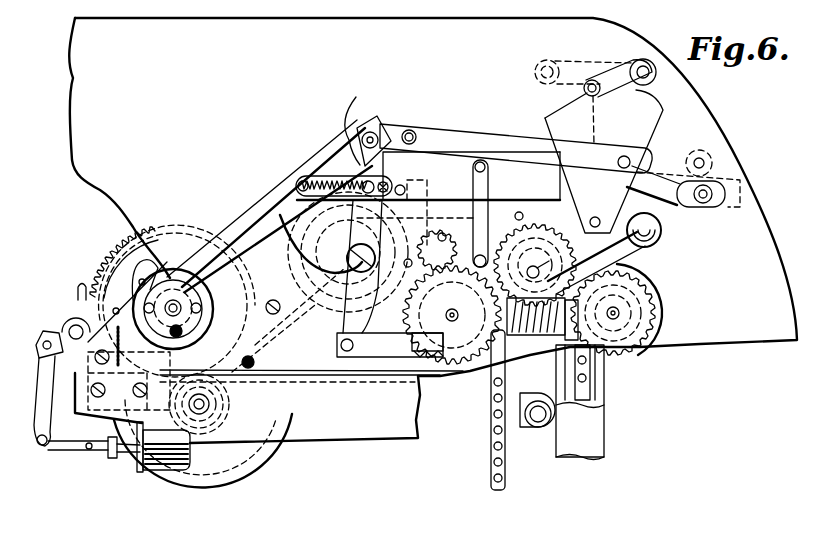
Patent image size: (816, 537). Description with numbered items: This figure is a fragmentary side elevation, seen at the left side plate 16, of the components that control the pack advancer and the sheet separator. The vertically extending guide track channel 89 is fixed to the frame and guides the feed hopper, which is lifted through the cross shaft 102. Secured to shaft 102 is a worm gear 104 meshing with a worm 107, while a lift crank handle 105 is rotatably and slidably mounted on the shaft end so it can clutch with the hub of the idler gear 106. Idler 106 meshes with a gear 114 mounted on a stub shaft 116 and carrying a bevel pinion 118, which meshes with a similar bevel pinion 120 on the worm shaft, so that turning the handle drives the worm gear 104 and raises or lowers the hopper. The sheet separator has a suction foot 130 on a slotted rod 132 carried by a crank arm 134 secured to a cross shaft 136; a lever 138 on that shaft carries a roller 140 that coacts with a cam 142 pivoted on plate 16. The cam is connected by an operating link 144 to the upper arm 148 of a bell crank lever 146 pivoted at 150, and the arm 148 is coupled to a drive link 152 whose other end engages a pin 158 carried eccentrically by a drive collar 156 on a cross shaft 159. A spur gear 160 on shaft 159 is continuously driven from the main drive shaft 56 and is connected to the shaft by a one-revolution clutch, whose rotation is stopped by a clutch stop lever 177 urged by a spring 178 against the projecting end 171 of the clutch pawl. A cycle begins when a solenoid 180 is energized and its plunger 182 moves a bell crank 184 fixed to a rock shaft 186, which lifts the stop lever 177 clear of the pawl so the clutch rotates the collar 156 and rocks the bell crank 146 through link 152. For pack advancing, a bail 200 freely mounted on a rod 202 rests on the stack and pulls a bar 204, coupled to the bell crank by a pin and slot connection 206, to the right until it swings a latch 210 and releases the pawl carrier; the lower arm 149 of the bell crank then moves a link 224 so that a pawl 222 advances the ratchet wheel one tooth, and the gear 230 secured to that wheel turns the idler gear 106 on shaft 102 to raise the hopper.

The side plate 16 is at (73, 78).
The main drive shaft 56 is at (210, 408).
The guide track channel 89 is at (604, 378).
The cross shaft 102 is at (552, 222).
The worm gear 104 is at (596, 263).
The lift crank handle 105 is at (659, 246).
The idler gear 106 is at (528, 222).
The worm 107 is at (536, 345).
The gear 114 is at (650, 343).
The stub shaft 116 is at (616, 313).
The bevel pinion 118 is at (657, 323).
The bevel pinion 120 is at (640, 278).
The suction foot 130 is at (536, 90).
The slotted rod 132 is at (534, 68).
The crank arm 134 is at (594, 60).
The cross shaft 136 is at (646, 59).
The lever 138 is at (614, 75).
The roller 140 is at (598, 96).
The cam 142 is at (650, 118).
The operating link 144 is at (440, 140).
The bell crank lever 146 is at (356, 165).
The upper arm 148 is at (371, 128).
The lower arm 149 is at (337, 357).
The pivot 150 is at (292, 268).
The drive link 152 is at (265, 225).
The drive collar 156 is at (222, 301).
The pin 158 is at (173, 286).
The cross shaft 159 is at (182, 286).
The spur gear 160 is at (138, 279).
The projecting end of clutch pawl 171 is at (143, 281).
The clutch stop lever 177 is at (142, 260).
The spring 178 is at (125, 375).
The solenoid 180 is at (167, 467).
The plunger 182 is at (100, 452).
The bell crank 184 is at (33, 440).
The rock shaft 186 is at (70, 325).
The bail 200 is at (668, 212).
The rod 202 is at (706, 158).
The bar 204 is at (557, 183).
The pin and slot connection 206 is at (397, 182).
The latch 210 is at (422, 213).
The pawl 222 is at (390, 346).
The link 224 is at (417, 353).
The gear 230 is at (458, 360).